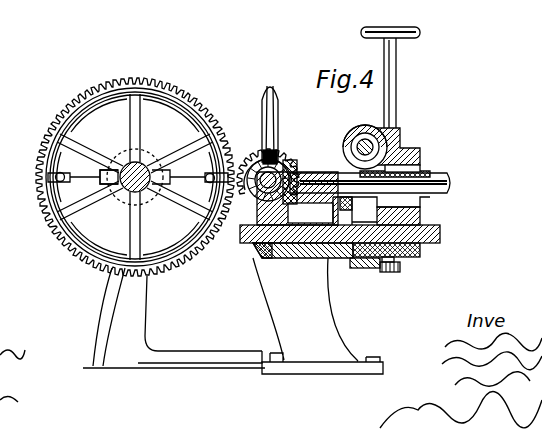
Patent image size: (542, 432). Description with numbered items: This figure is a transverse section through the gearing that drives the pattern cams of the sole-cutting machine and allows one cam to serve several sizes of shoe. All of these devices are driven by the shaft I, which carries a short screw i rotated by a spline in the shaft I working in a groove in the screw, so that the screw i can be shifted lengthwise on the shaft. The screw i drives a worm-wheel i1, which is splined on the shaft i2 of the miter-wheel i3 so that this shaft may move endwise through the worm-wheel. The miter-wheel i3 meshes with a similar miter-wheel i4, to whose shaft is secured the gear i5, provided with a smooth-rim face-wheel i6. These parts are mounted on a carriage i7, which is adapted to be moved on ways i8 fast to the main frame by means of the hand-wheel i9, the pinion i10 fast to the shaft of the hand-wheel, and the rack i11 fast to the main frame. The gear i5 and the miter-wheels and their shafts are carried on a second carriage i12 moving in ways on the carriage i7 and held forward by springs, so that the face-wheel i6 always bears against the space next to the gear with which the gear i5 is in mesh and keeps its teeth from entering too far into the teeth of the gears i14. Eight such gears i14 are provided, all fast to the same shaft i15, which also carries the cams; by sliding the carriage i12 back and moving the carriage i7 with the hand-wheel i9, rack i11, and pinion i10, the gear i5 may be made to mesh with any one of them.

The gears i14 is at (158, 110).
The shaft i15 is at (100, 177).
The carriage i12 is at (440, 232).
The ways i8 is at (260, 259).
The carriage i7 is at (420, 247).
The rack i11 is at (367, 268).
The pinion i10 is at (402, 266).
The worm-wheel i1 is at (357, 199).
The shaft i2 is at (428, 190).
The shaft I is at (393, 135).
The screw i is at (350, 149).
The hand-wheel i9 is at (401, 26).
The gear i5 is at (244, 160).
The miter-wheel i4 is at (258, 152).
The face-wheel i6 is at (287, 128).
The miter-wheel i3 is at (296, 160).